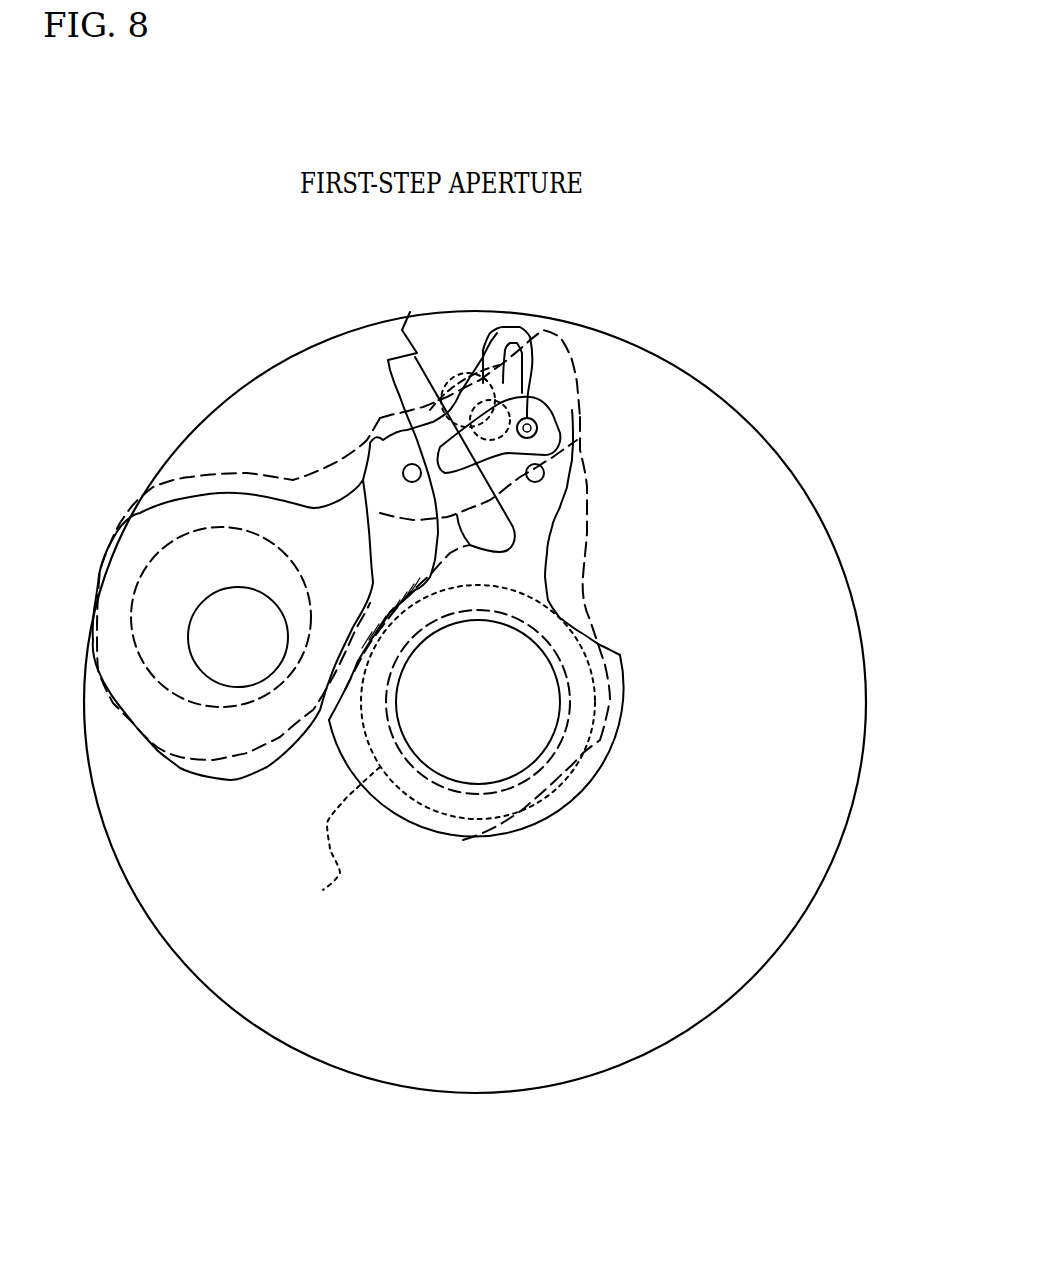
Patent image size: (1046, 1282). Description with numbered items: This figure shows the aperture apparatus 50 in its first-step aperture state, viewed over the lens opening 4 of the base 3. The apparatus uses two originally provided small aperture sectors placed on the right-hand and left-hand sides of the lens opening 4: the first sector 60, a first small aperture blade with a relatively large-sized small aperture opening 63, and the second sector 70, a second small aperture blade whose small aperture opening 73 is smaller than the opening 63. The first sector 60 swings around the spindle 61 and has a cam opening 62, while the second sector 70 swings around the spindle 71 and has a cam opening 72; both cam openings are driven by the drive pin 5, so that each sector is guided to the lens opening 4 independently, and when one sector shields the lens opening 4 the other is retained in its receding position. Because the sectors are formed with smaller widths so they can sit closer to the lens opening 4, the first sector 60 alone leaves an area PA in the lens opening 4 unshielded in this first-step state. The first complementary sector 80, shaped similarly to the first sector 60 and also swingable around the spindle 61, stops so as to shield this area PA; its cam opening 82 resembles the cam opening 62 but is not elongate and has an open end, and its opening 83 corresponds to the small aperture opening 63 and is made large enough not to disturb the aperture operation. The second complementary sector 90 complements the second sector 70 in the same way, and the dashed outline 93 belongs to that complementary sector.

The base plate 3 is at (633, 995).
The lens opening 4 is at (343, 845).
The drive pin 5 is at (537, 427).
The aperture apparatus 50 is at (188, 342).
The first sector 60 is at (533, 568).
The spindle 61 is at (544, 470).
The cam opening 62 is at (525, 367).
The small aperture opening 63 is at (517, 730).
The second sector 70 is at (258, 765).
The spindle 71 is at (404, 468).
The cam opening 72 is at (415, 350).
The small aperture opening 73 is at (220, 662).
The first complementary sector 80 is at (592, 488).
The cam opening 82 is at (380, 430).
The opening 83 is at (560, 667).
The second complementary sector 90 is at (200, 487).
The gear wheel 93 is at (157, 580).
The area PA is at (383, 645).